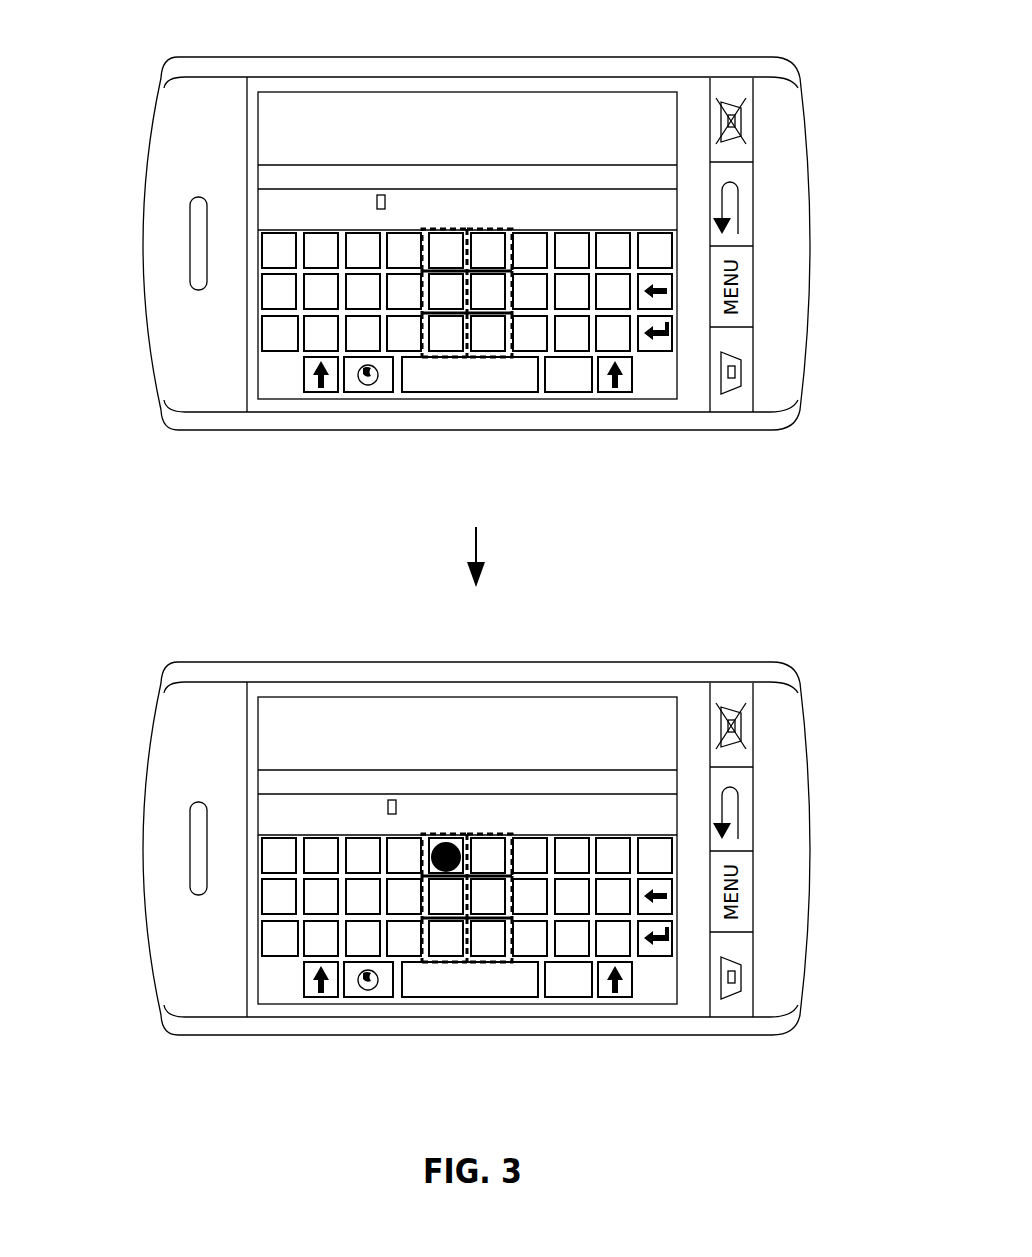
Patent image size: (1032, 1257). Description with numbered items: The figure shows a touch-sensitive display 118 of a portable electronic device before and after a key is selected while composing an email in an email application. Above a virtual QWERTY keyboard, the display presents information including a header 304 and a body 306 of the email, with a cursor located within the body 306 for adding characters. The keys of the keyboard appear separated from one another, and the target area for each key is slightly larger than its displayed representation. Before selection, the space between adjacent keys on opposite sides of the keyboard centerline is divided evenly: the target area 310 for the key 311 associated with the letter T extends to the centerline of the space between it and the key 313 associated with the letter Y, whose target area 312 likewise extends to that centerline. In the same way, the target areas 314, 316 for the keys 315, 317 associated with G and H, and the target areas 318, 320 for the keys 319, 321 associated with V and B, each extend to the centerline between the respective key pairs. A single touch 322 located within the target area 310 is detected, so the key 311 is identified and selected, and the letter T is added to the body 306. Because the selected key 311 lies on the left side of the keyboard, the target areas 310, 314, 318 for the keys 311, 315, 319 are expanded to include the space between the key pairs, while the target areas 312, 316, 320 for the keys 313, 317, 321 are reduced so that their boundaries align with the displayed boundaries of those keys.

The touch-sensitive display 118 is at (677, 210).
The header 304 is at (268, 126).
The body 306 is at (310, 222).
The target area 310 is at (422, 235).
The key 311 is at (445, 235).
The target area 312 is at (512, 235).
The key 313 is at (490, 235).
The target area 314 is at (420, 292).
The key 315 is at (423, 335).
The target area 316 is at (510, 292).
The key 317 is at (492, 312).
The target area 318 is at (445, 308).
The key 319 is at (443, 355).
The target area 320 is at (513, 342).
The key 321 is at (475, 313).
The single touch 322 is at (448, 841).